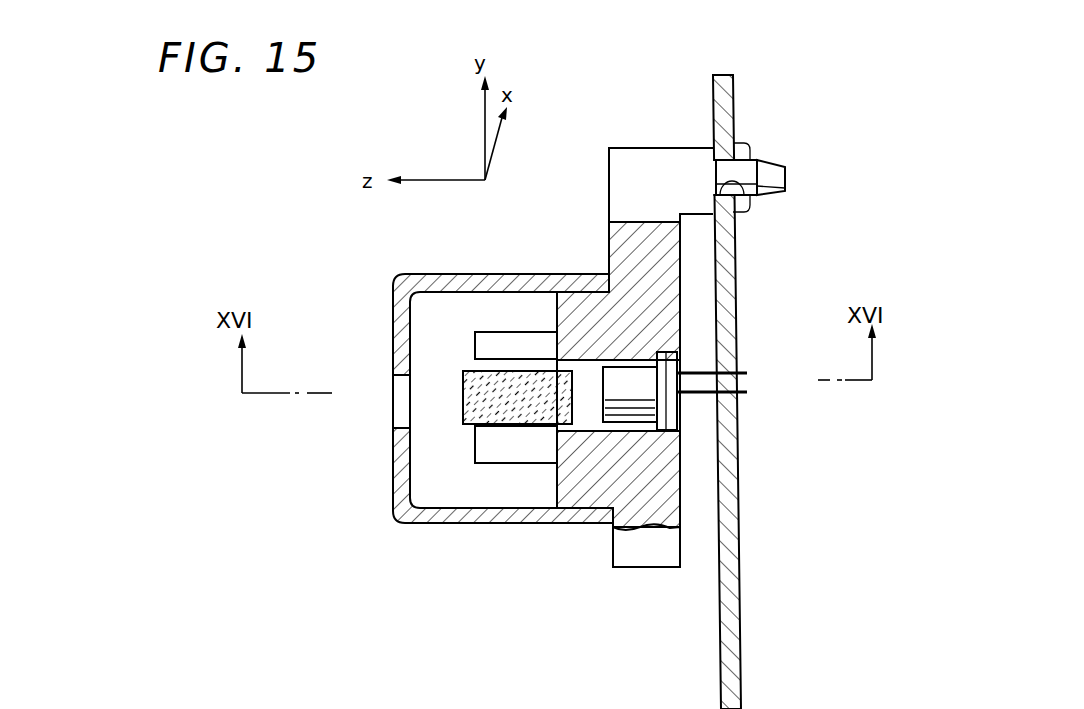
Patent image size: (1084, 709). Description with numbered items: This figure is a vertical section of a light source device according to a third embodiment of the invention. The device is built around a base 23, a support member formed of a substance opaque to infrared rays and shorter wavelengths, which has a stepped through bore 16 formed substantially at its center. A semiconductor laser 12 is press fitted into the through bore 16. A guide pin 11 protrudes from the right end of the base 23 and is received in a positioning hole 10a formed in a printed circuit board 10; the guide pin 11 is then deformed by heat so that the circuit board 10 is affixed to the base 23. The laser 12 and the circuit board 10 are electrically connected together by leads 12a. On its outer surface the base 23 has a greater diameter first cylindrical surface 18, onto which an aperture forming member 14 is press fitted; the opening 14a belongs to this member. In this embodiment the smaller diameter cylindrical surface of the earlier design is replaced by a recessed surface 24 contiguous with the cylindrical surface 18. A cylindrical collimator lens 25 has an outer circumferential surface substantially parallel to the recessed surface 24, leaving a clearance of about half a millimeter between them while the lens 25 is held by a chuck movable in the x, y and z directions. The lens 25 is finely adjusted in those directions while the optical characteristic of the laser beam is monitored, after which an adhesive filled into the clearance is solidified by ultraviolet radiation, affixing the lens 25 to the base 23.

The printed circuit board 10 is at (741, 518).
The positioning hole 10a is at (762, 198).
The guide pin 11 is at (783, 160).
The semiconductor laser 12 is at (672, 416).
The leads 12a is at (747, 374).
The aperture forming member 14 is at (393, 493).
The housing opening 14a is at (393, 378).
The through bore 16 is at (587, 361).
The first cylindrical surface 18 is at (587, 514).
The base 23 is at (683, 290).
The recessed surface 24 is at (508, 433).
The cylindrical collimator lens 25 is at (465, 378).